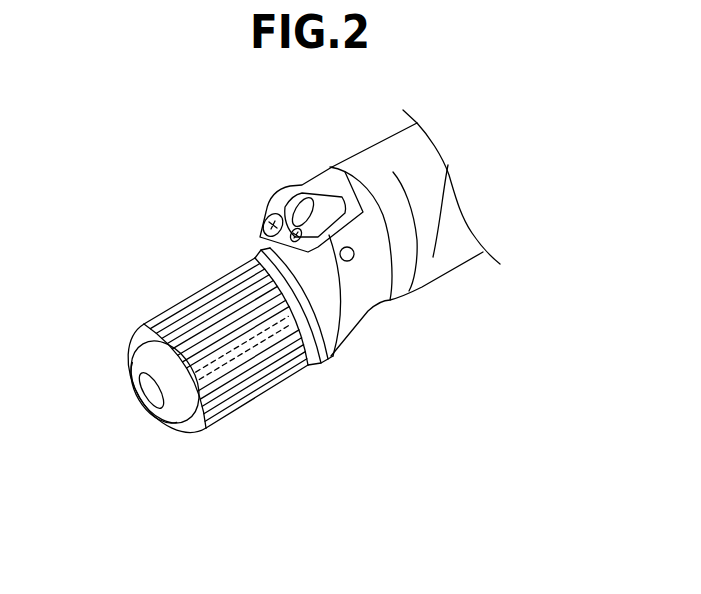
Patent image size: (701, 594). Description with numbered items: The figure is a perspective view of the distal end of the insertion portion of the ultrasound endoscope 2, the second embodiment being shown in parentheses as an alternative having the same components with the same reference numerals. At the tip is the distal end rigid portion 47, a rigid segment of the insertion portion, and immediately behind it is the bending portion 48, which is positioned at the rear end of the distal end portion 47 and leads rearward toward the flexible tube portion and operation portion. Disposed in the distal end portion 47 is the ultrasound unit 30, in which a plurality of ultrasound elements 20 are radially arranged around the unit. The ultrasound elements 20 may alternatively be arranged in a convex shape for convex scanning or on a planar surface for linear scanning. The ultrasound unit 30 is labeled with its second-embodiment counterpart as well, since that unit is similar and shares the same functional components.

The ultrasound endoscope 2 is at (118, 156).
The ultrasound elements 20 is at (237, 352).
The ultrasound unit 30 is at (170, 289).
The distal end rigid portion 47 is at (213, 195).
The bending portion 48 is at (473, 258).